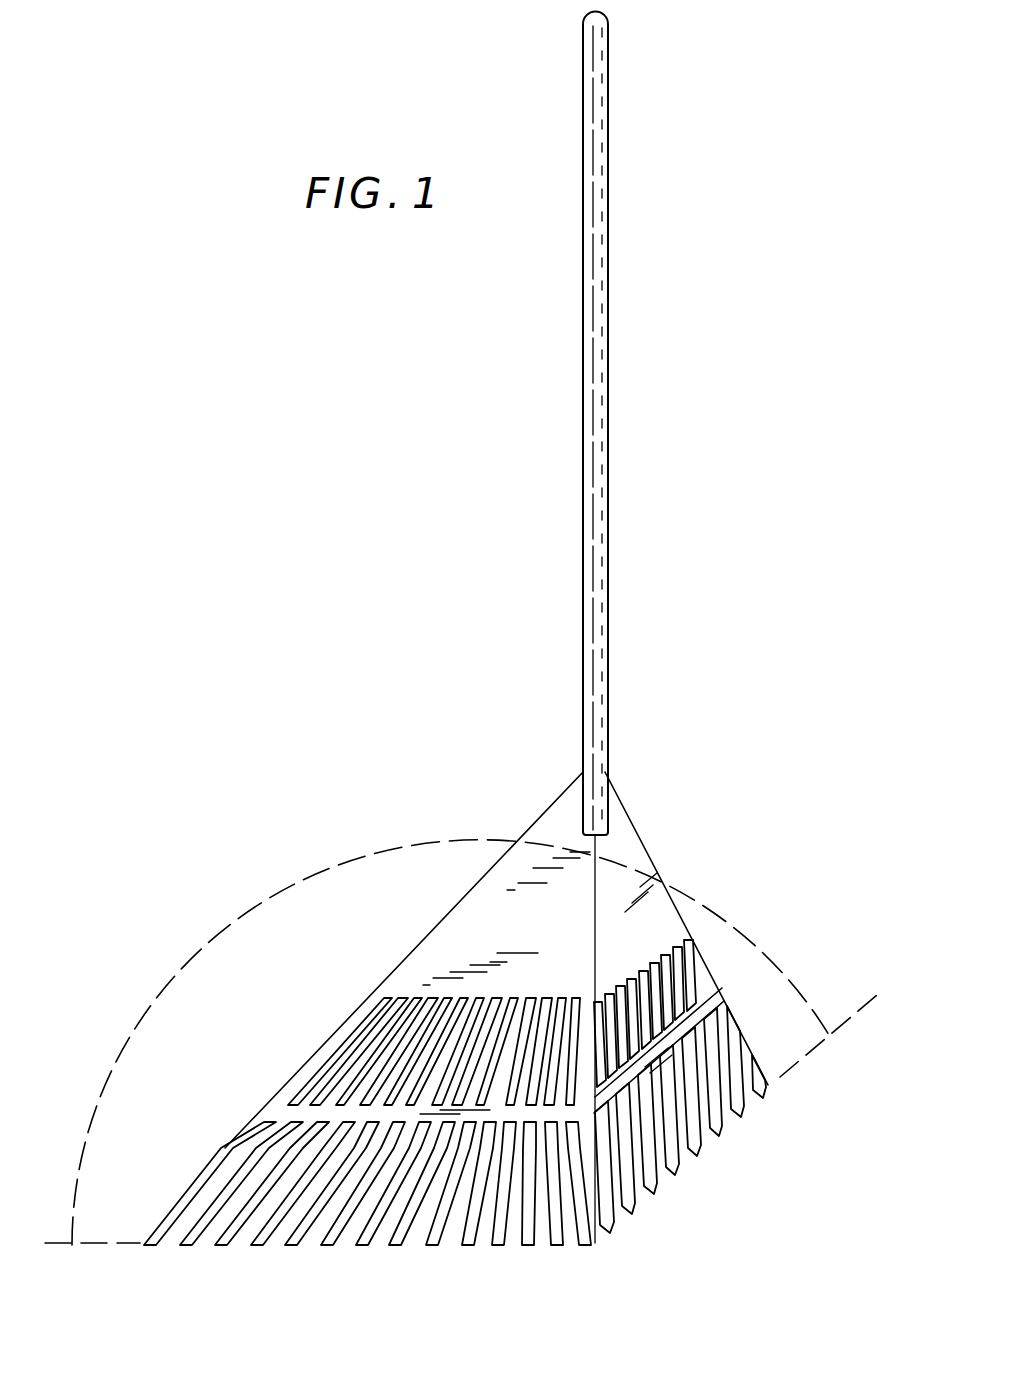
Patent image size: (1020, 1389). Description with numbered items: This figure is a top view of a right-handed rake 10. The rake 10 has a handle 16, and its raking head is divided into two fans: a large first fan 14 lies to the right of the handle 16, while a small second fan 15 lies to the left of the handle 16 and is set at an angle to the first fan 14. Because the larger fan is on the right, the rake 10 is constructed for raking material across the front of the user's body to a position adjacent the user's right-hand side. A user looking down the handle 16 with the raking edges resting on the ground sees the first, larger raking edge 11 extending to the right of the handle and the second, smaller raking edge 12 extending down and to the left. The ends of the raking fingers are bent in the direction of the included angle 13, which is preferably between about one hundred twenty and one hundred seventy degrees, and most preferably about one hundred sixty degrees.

The rake 10 is at (638, 177).
The first raking edge 11 is at (424, 1263).
The second raking edge 12 is at (697, 1198).
The included angle 13 is at (445, 834).
The first fan 14 is at (310, 1022).
The second fan 15 is at (762, 1038).
The handle 16 is at (610, 556).